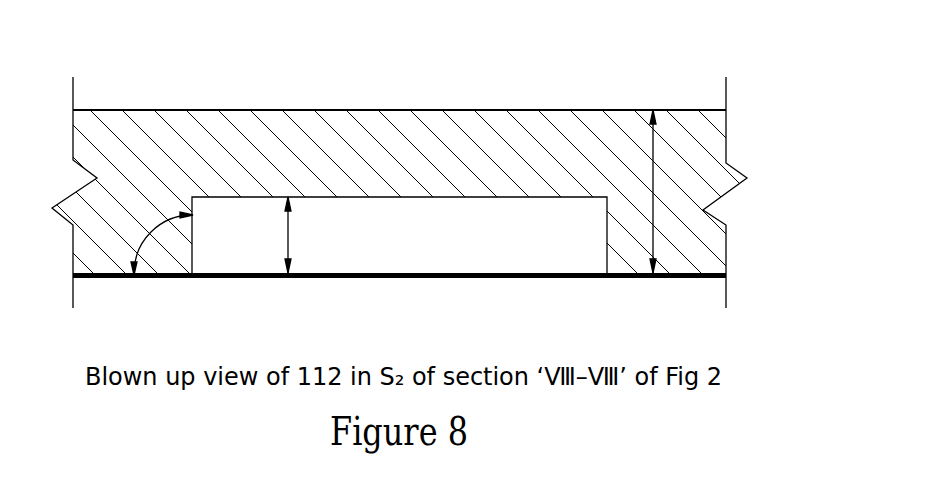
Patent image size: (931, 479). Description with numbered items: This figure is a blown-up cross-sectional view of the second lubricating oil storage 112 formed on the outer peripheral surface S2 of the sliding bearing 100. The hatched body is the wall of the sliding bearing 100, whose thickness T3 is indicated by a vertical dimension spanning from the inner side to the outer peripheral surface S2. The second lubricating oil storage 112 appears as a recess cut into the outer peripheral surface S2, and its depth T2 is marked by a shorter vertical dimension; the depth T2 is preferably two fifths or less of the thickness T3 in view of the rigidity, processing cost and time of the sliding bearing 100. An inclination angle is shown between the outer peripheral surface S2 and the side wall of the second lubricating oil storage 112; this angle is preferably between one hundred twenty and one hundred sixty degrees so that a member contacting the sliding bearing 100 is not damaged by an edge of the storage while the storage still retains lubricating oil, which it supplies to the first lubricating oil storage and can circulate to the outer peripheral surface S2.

The sliding bearing 100 is at (398, 153).
The second lubricating oil storage 112 is at (500, 245).
The thickness of the sliding bearing T3 is at (650, 182).
The depth of the second lubricating oil storage T2 is at (288, 233).
The outer peripheral surface S2 is at (363, 278).